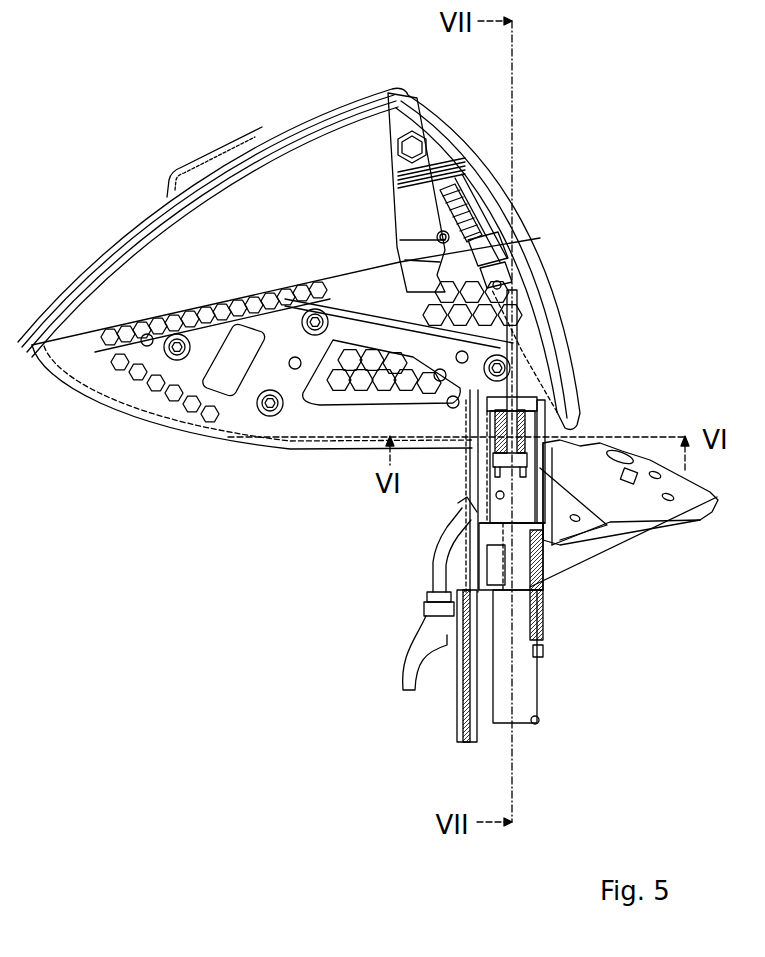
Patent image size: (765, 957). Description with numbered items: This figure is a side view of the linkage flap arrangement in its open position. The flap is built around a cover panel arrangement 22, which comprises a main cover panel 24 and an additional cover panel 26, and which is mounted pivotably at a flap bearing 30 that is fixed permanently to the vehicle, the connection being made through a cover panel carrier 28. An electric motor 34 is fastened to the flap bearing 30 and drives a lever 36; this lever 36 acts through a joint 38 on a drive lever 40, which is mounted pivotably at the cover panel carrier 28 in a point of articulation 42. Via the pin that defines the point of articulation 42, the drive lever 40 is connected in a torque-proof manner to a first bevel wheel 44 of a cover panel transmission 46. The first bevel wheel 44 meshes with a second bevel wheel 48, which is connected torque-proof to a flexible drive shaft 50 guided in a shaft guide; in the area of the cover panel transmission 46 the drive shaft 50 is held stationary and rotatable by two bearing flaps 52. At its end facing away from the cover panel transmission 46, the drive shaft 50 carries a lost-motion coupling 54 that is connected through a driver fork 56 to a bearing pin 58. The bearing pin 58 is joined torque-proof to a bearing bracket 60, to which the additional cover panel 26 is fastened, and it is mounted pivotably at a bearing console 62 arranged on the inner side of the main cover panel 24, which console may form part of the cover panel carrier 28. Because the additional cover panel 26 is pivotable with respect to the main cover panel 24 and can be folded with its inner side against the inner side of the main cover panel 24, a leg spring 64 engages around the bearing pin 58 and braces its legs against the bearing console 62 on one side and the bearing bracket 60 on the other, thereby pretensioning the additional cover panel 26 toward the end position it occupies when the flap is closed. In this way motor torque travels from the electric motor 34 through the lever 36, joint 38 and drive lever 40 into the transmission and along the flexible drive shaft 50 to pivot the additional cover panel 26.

The cover panel arrangement 22 is at (203, 160).
The main cover panel 24 is at (403, 92).
The additional cover panel 26 is at (158, 268).
The cover panel carrier 28 is at (317, 418).
The flap bearing 30 is at (690, 497).
The electric motor 34 is at (517, 635).
The lever 36 is at (463, 690).
The joint 38 is at (447, 632).
The drive lever 40 is at (440, 560).
The point of articulation 42 is at (477, 432).
The first bevel wheel 44 is at (507, 423).
The cover panel transmission 46 is at (523, 447).
The second bevel wheel 48 is at (540, 452).
The flexible drive shaft 50 is at (517, 393).
The bearing flaps 52 is at (520, 410).
The lost-motion coupling 54 is at (501, 285).
The driver fork 56 is at (493, 270).
The bearing pin 58 is at (478, 258).
The bearing bracket 60 is at (407, 197).
The bearing console 62 is at (430, 222).
The leg spring 64 is at (470, 222).